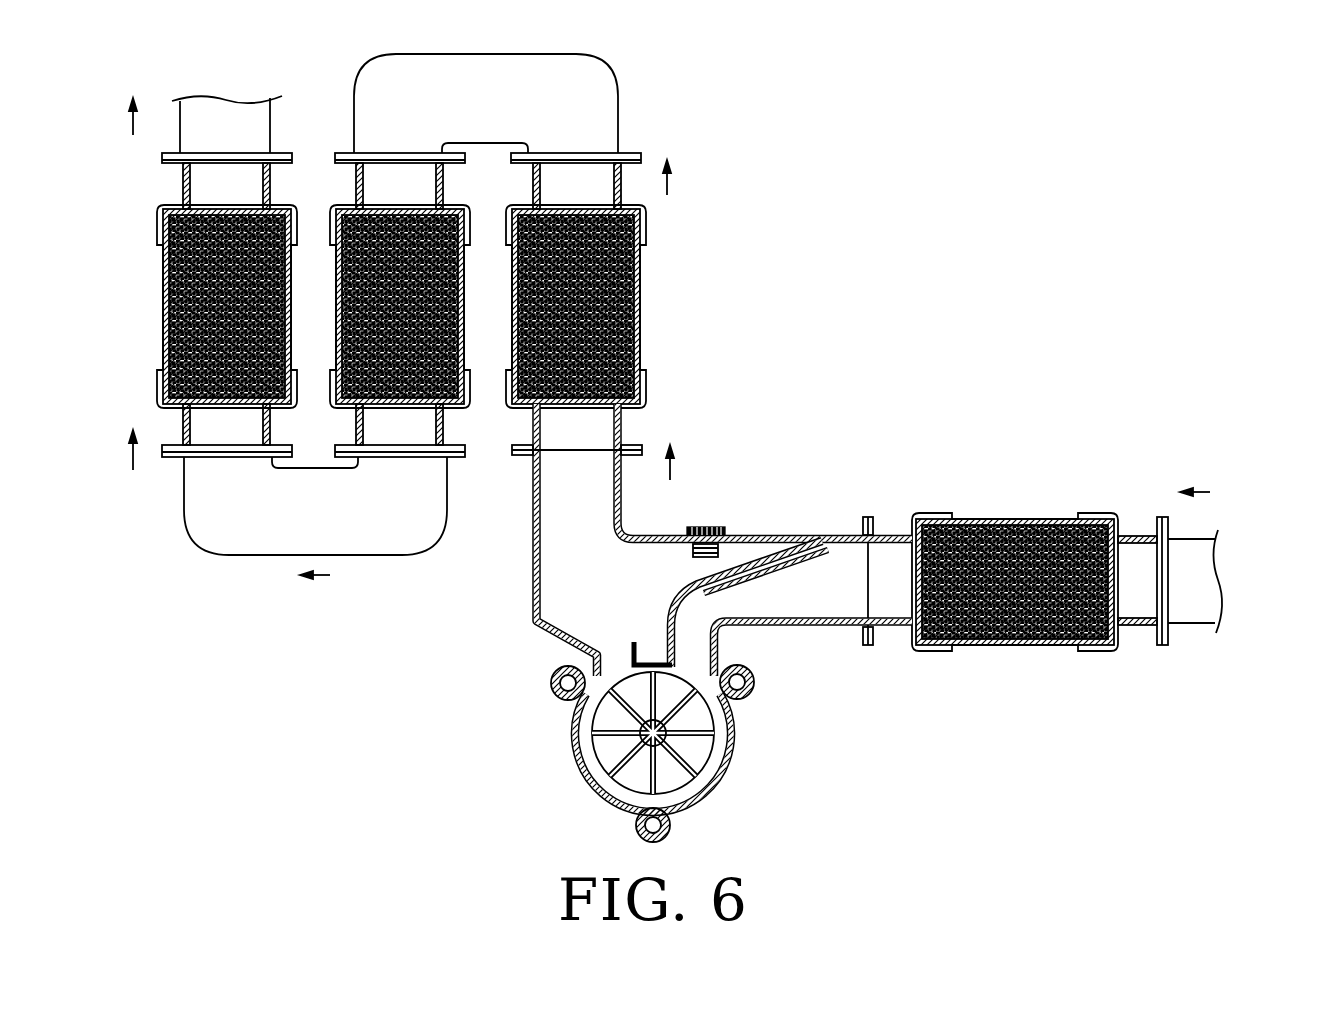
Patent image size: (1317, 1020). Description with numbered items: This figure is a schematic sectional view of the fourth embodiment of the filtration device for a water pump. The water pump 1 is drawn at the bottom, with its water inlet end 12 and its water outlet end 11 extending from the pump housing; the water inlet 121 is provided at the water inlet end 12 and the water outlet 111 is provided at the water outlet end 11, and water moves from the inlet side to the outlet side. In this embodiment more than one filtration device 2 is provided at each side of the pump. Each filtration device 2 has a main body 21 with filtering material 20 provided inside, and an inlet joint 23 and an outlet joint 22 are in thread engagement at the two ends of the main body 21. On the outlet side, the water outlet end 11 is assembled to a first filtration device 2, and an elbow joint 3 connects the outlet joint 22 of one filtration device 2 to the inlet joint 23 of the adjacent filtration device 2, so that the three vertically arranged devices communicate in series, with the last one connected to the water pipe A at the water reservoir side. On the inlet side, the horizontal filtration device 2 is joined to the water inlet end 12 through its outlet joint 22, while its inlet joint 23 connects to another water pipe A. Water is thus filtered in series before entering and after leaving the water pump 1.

The water pump 1 is at (571, 770).
The filtration device 2 is at (657, 448).
The elbow joint 3 is at (597, 86).
The water outlet end 11 is at (623, 497).
The water inlet end 12 is at (817, 628).
The filtering material 20 is at (508, 306).
The main body 21 is at (645, 262).
The outlet joint 22 is at (620, 190).
The inlet joint 23 is at (505, 427).
The water outlet 111 is at (598, 461).
The water inlet 121 is at (860, 560).
The water pipe A is at (238, 112).